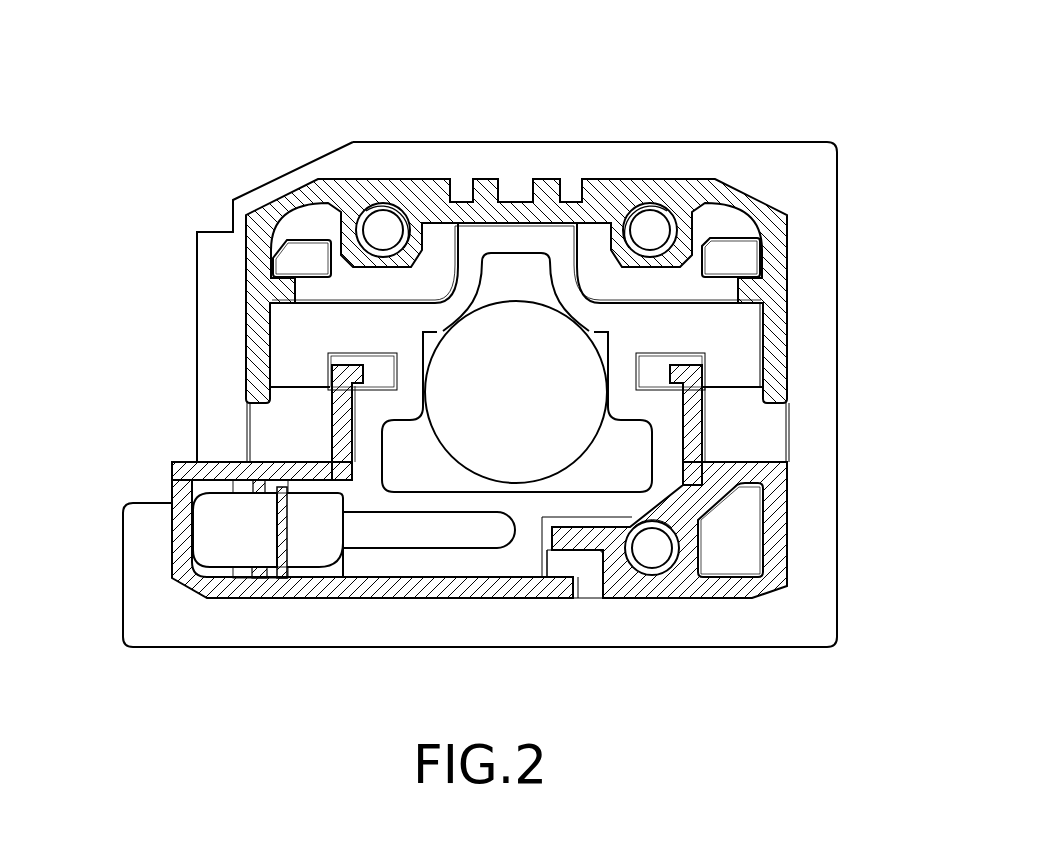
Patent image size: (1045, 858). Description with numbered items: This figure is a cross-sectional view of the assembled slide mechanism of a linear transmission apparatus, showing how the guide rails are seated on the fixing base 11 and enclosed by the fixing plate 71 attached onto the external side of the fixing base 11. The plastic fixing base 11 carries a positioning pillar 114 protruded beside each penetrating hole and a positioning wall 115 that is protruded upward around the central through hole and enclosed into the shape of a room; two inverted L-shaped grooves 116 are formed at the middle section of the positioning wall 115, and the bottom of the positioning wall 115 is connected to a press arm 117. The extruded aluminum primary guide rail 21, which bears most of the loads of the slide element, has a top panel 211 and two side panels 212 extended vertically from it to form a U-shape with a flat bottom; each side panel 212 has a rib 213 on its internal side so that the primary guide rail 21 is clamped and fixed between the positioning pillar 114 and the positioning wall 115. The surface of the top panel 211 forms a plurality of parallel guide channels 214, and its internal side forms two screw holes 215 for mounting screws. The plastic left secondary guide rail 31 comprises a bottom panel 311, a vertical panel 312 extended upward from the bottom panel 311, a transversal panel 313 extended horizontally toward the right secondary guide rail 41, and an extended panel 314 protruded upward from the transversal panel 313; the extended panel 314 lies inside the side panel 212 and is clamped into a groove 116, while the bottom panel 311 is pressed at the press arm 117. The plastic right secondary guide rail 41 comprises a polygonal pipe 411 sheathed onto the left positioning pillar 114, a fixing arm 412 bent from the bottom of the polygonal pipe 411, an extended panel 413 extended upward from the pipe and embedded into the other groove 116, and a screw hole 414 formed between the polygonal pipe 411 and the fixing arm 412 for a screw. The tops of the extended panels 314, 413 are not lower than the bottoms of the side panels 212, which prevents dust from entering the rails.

The fixing base 11 is at (800, 438).
The primary guide rail 21 is at (688, 164).
The left secondary guide rail 31 is at (153, 538).
The right secondary guide rail 41 is at (808, 538).
The fixing plate 71 is at (823, 179).
The positioning pillar 114 is at (728, 258).
The positioning wall 115 is at (738, 343).
The inverted L-shaped groove 116 is at (373, 365).
The press arm 117 is at (433, 558).
The top panel 211 is at (648, 183).
The side panel 212 is at (255, 335).
The rib 213 is at (282, 290).
The guide channel 214 is at (515, 195).
The screw hole 215 is at (377, 218).
The bottom panel 311 is at (343, 590).
The vertical panel 312 is at (178, 518).
The transversal panel 313 is at (223, 472).
The extended panel 314 is at (340, 422).
The polygonal pipe 411 is at (785, 517).
The fixing arm 412 is at (610, 570).
The extended panel 413 is at (693, 422).
The screw hole 414 is at (663, 557).